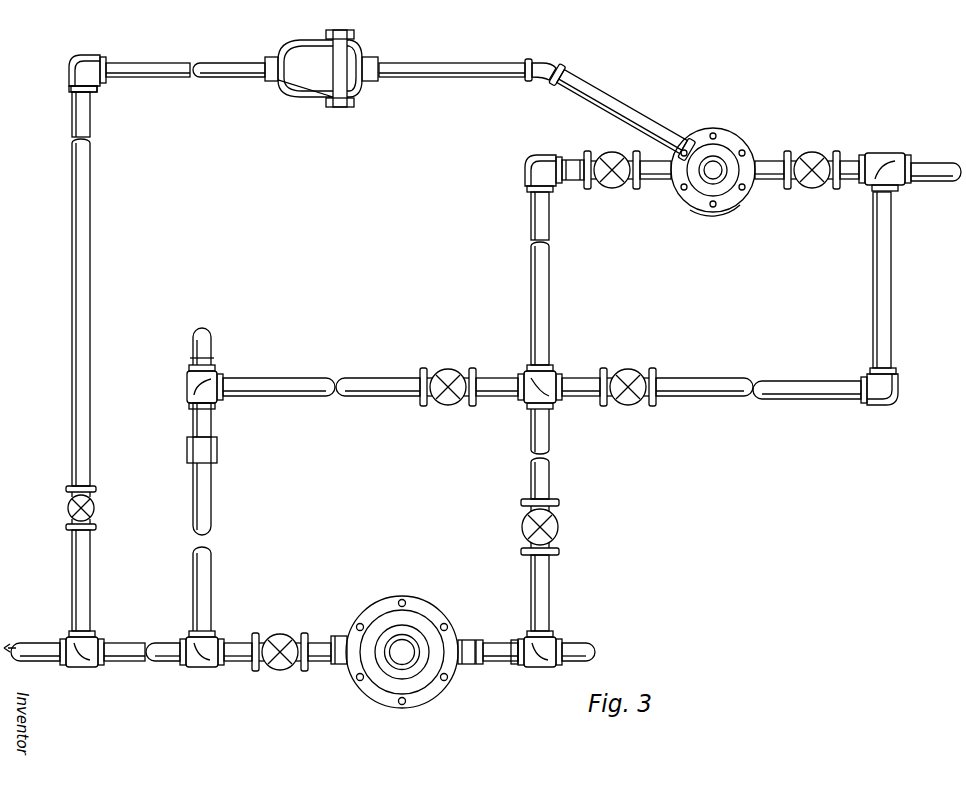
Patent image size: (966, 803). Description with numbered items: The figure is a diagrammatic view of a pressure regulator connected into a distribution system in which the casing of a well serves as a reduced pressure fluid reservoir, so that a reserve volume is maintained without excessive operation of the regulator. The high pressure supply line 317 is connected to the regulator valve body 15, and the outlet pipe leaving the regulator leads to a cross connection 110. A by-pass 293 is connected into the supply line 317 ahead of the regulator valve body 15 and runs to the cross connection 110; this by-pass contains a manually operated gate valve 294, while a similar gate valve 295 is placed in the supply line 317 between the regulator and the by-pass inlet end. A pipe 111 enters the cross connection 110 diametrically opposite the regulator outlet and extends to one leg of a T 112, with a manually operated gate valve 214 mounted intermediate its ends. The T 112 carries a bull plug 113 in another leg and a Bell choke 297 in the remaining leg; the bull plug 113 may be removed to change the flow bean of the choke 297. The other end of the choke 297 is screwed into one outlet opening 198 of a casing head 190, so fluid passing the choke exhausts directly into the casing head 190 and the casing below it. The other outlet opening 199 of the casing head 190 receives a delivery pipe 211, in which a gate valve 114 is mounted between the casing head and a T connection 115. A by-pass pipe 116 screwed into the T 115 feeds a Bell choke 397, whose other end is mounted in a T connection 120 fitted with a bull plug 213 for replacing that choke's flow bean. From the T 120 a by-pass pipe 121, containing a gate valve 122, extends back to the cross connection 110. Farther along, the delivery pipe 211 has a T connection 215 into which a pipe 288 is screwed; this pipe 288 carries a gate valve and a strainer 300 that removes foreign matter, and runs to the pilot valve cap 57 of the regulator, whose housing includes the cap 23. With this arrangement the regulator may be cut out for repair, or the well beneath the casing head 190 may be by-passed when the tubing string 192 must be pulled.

The pipe 288 is at (168, 72).
The strainer 300 is at (300, 78).
The pilot valve cap 57 is at (722, 155).
The cap 23 is at (700, 140).
The regulator valve body 15 is at (714, 212).
The gate valve 295 is at (812, 190).
The high pressure supply line 317 is at (768, 163).
The by-pass 293 is at (873, 285).
The bull plug 213 is at (212, 343).
The T connection 120 is at (188, 387).
The Bell choke 397 is at (217, 430).
The by-pass pipe 121 is at (380, 398).
The gate valve 122 is at (455, 372).
The cross connection 110 is at (558, 405).
The gate valve 294 is at (633, 405).
The pipe 111 is at (531, 478).
The gate valve 214 is at (560, 525).
The T 112 is at (552, 650).
The bull plug 113 is at (596, 650).
The Bell choke 297 is at (490, 643).
The outlet opening 198 is at (465, 668).
The casing head 190 is at (415, 605).
The tubing string 192 is at (385, 665).
The outlet opening 199 is at (338, 636).
The gate valve 114 is at (280, 670).
The delivery pipe 211 is at (36, 643).
The T connection 215 is at (88, 668).
The T connection 115 is at (196, 668).
The by-pass pipe 116 is at (205, 562).